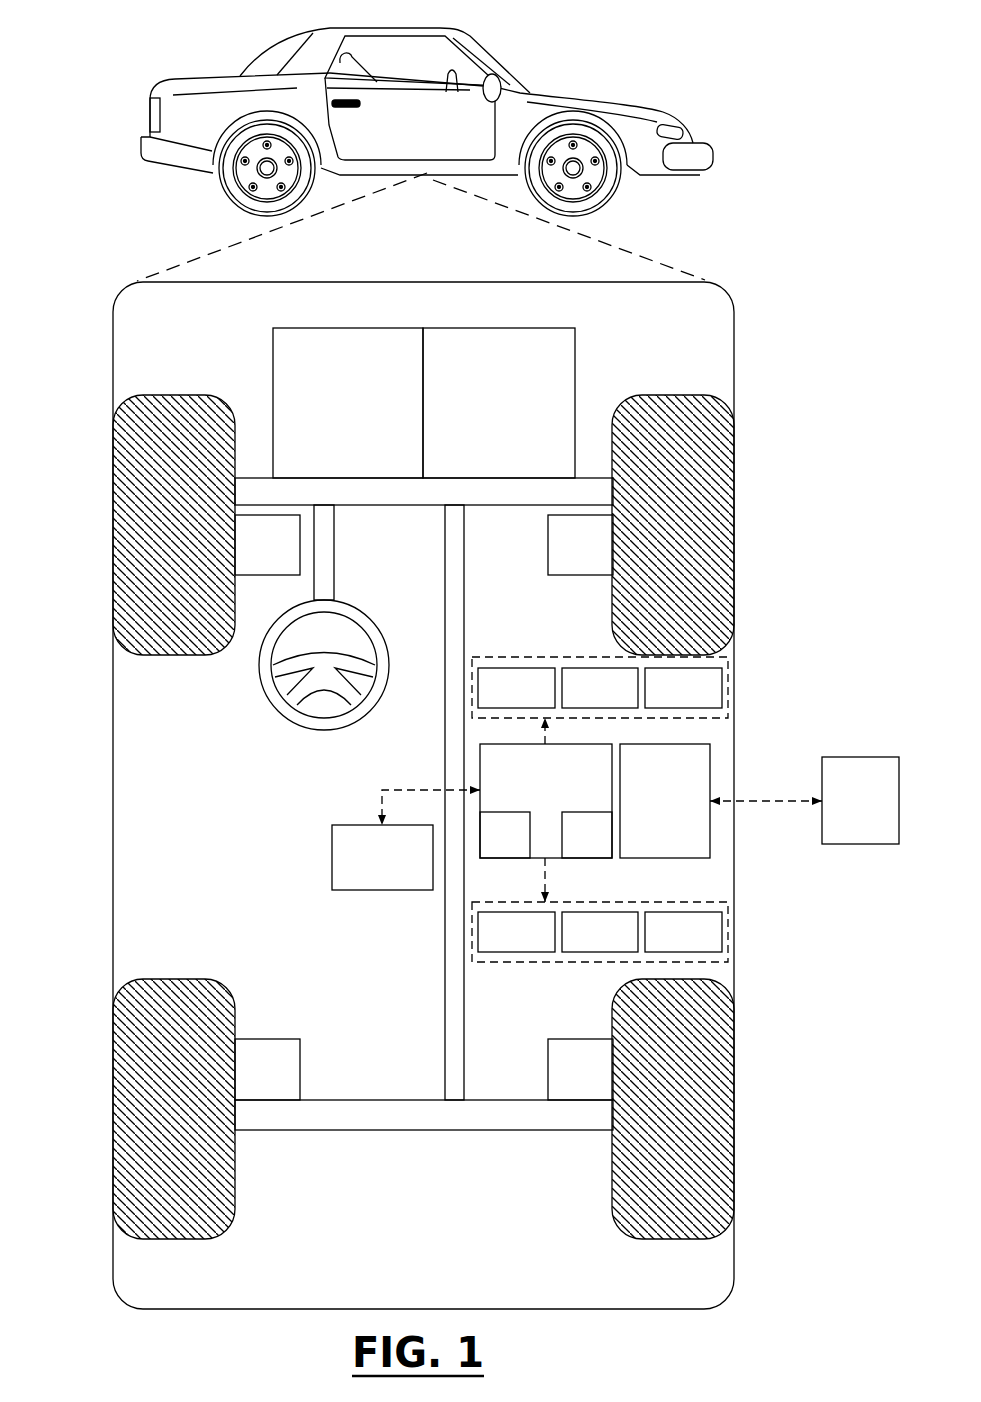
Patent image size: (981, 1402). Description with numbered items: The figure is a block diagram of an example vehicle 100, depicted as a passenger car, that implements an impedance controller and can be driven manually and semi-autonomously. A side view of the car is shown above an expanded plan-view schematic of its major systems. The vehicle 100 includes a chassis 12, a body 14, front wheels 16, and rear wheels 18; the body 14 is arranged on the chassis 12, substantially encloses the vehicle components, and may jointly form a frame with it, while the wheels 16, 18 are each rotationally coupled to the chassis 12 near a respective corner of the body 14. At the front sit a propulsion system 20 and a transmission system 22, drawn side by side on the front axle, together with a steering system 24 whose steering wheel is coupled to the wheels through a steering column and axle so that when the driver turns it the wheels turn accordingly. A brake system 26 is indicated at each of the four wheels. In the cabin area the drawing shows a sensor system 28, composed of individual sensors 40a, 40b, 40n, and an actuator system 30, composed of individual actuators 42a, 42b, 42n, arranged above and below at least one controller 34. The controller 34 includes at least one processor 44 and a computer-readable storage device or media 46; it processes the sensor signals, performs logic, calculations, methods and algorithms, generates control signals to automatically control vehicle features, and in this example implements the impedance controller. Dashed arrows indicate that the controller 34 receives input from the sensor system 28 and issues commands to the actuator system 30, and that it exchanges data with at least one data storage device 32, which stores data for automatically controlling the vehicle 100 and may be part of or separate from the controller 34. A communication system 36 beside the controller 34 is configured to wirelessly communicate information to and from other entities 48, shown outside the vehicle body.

The vehicle 100 is at (148, 113).
The chassis 12 is at (444, 965).
The body 14 is at (112, 790).
The front wheels 16 is at (173, 396).
The rear wheels 18 is at (172, 1240).
The propulsion system 20 is at (332, 419).
The transmission system 22 is at (483, 419).
The steering system 24 is at (344, 569).
The brake system 26 is at (251, 559).
The sensor system 28 is at (557, 657).
The actuator system 30 is at (565, 963).
The data storage device 32 is at (366, 871).
The controller 34 is at (530, 811).
The communication system 36 is at (649, 814).
The sensor 40a is at (493, 702).
The sensor 40b is at (577, 702).
The sensor 40n is at (660, 702).
The actuator 42a is at (493, 946).
The actuator 42b is at (577, 946).
The actuator 42n is at (660, 946).
The processor 44 is at (489, 849).
The computer-readable storage device or media 46 is at (571, 849).
The other entities 48 is at (844, 814).